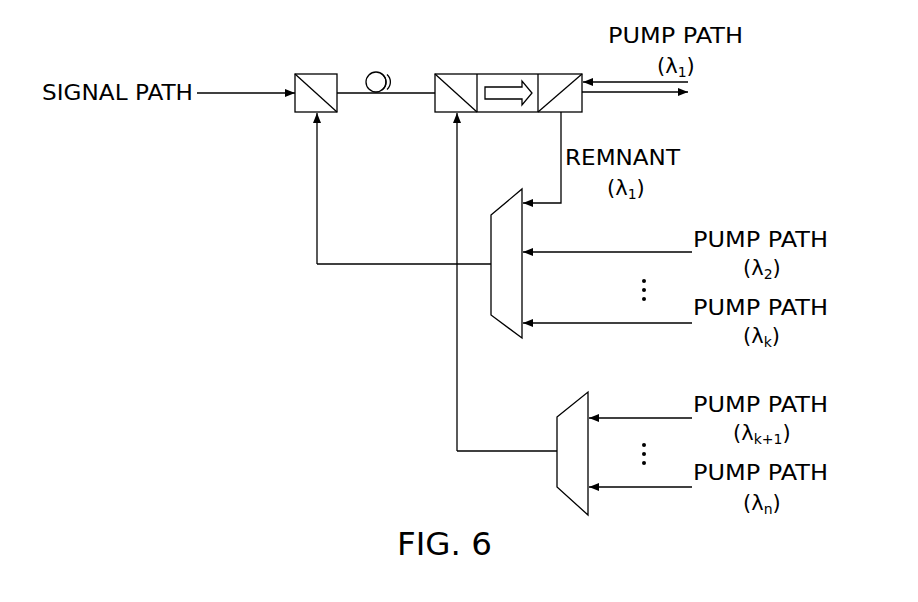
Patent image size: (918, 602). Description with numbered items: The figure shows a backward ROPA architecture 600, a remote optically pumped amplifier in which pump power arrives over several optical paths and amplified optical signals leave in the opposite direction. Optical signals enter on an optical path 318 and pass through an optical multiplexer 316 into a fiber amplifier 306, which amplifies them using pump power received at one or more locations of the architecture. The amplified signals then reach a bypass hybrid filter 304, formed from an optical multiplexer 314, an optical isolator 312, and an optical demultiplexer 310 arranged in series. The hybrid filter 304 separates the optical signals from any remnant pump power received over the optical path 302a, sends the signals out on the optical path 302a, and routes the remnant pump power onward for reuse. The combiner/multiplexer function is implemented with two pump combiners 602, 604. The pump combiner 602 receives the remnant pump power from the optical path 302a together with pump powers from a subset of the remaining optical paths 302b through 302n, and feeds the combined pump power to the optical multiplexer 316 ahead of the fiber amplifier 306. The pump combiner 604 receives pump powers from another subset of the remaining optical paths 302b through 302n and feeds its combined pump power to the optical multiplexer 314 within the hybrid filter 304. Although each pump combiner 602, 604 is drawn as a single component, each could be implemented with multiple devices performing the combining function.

The backward ROPA architecture 600 is at (198, 355).
The optical path 318 is at (226, 99).
The optical multiplexer 316 is at (307, 70).
The fiber amplifier 306 is at (384, 64).
The bypass hybrid filter 304 is at (537, 82).
The optical multiplexer 314 is at (447, 73).
The optical isolator 312 is at (502, 116).
The optical demultiplexer 310 is at (574, 116).
The optical path 302a is at (653, 99).
The optical path 302b is at (623, 250).
The optical path 302n is at (622, 489).
The pump combiner 602 is at (501, 326).
The pump combiner 604 is at (570, 393).